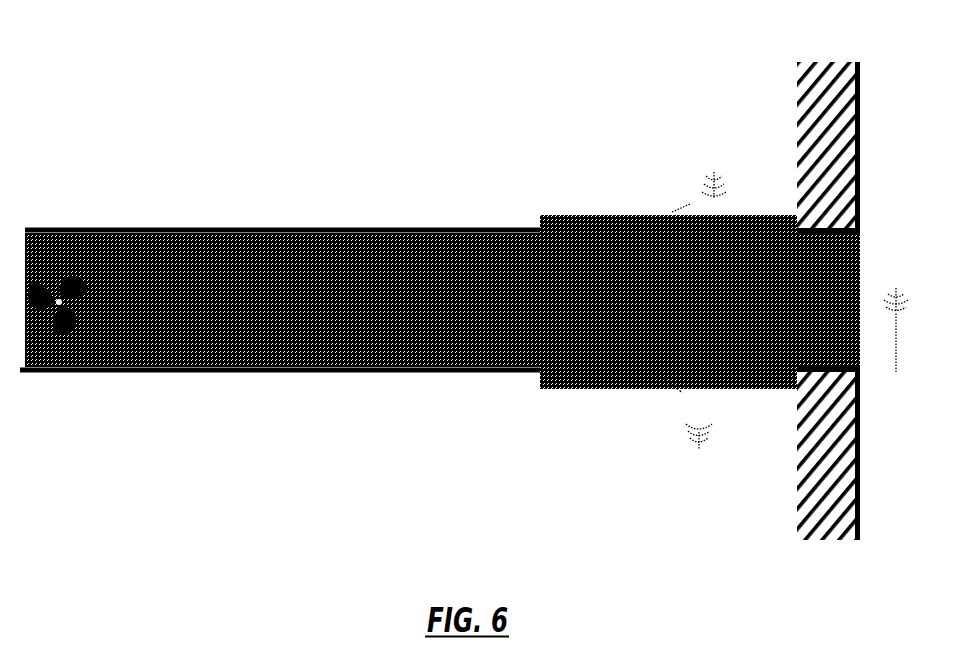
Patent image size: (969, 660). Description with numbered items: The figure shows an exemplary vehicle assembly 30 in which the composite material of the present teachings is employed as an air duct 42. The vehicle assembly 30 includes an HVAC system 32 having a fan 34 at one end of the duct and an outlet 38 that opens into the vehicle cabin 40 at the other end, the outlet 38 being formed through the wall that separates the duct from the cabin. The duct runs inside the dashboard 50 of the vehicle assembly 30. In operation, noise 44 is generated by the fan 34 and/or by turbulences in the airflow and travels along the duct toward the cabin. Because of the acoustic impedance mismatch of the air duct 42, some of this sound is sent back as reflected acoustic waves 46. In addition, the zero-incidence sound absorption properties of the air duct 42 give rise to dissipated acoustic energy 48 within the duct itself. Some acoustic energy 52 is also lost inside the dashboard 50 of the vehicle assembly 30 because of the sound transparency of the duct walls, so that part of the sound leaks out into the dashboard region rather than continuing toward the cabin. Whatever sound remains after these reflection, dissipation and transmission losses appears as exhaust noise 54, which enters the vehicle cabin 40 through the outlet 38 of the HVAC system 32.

The vehicle assembly 30 is at (155, 98).
The HVAC system 32 is at (110, 225).
The fan 34 is at (60, 318).
The outlet 38 is at (845, 262).
The vehicle cabin 40 is at (933, 162).
The air duct 42 is at (576, 218).
The noise 44 is at (228, 258).
The reflected acoustic waves 46 is at (495, 345).
The dissipated acoustic energy 48 is at (660, 375).
The dashboard 50 is at (315, 162).
The acoustic energy 52 is at (688, 441).
The exhaust noise 54 is at (796, 293).